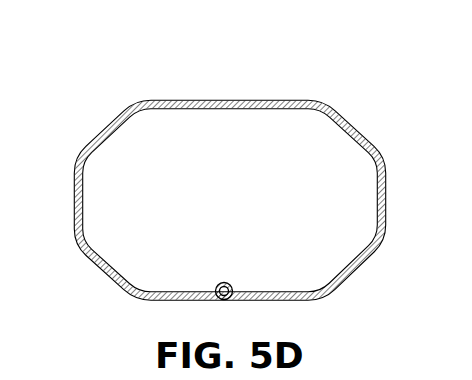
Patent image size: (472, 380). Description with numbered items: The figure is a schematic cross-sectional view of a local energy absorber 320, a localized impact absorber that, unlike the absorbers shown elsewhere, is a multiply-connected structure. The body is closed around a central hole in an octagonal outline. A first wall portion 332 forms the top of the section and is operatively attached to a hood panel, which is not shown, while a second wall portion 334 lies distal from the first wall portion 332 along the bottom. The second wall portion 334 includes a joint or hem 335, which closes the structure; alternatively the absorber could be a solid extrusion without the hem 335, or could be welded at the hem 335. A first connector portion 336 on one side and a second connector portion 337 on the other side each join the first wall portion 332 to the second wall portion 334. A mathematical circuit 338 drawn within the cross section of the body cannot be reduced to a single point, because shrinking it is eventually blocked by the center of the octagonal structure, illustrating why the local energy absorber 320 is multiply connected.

The local energy absorber 320 is at (104, 95).
The first wall portion 332 is at (217, 100).
The second wall portion 334 is at (173, 292).
The hem 335 is at (225, 284).
The first connector portion 336 is at (74, 203).
The second connector portion 337 is at (386, 212).
The mathematical circuit 338 is at (354, 117).